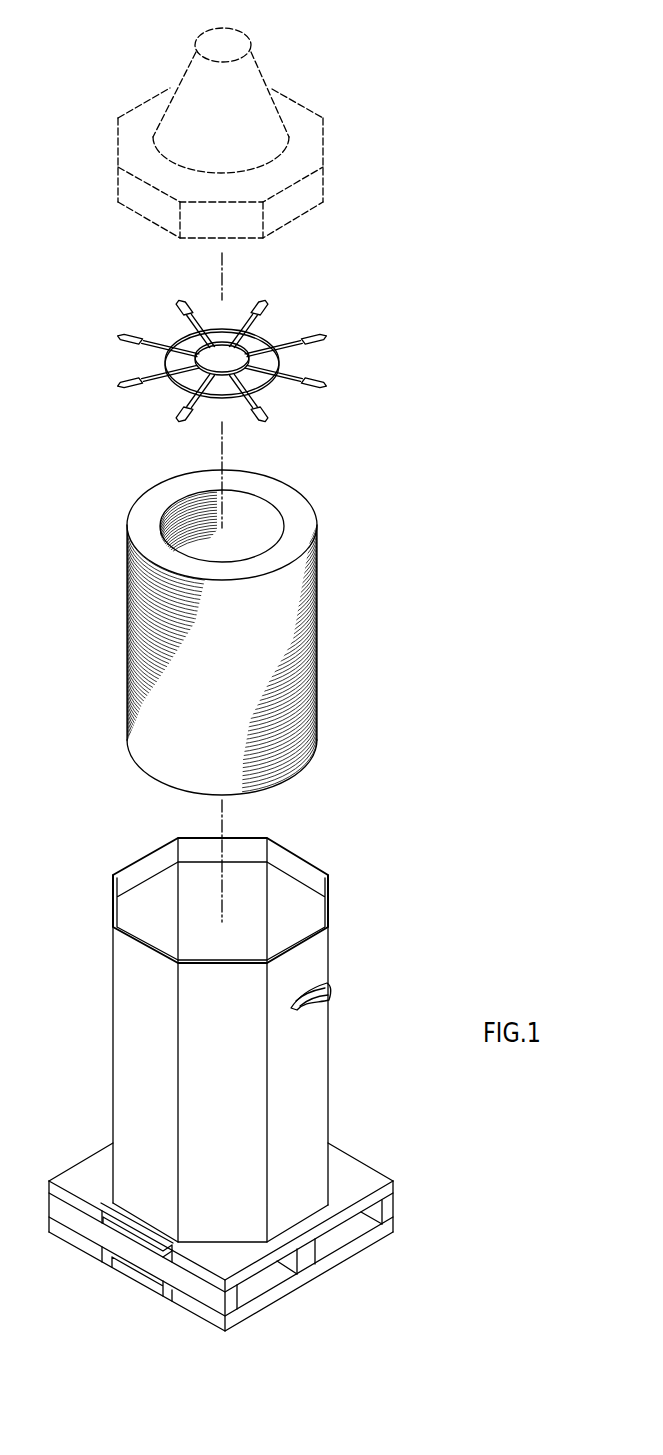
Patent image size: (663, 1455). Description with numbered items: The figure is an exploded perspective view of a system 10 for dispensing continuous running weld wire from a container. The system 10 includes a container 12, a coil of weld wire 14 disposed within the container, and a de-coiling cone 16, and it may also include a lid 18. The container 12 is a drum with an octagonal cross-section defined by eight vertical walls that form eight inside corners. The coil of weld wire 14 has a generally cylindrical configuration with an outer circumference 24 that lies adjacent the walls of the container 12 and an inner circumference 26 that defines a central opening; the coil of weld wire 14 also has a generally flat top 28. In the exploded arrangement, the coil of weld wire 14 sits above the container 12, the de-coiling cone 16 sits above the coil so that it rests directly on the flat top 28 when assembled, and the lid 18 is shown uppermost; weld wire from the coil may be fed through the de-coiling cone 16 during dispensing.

The system 10 is at (468, 208).
The container 12 is at (104, 1035).
The coil of weld wire 14 is at (118, 618).
The de-coiling cone 16 is at (118, 389).
The lid 18 is at (307, 110).
The outer circumference 24 is at (307, 497).
The inner circumference 26 is at (270, 508).
The top 28 is at (153, 505).